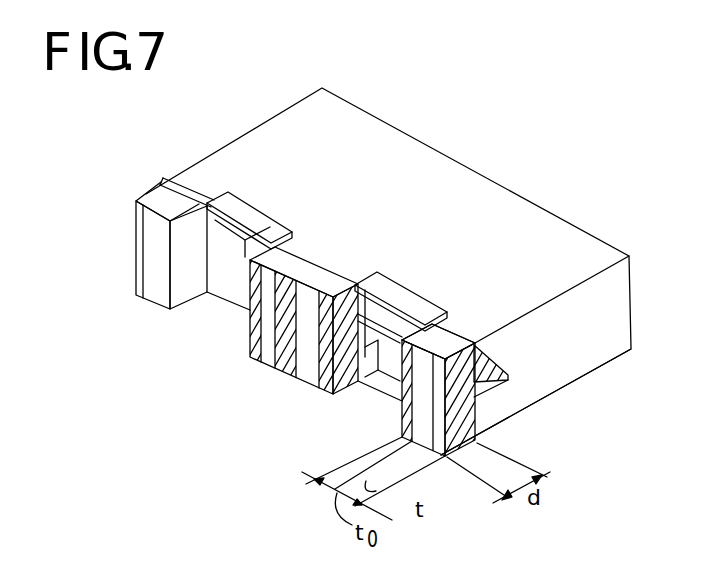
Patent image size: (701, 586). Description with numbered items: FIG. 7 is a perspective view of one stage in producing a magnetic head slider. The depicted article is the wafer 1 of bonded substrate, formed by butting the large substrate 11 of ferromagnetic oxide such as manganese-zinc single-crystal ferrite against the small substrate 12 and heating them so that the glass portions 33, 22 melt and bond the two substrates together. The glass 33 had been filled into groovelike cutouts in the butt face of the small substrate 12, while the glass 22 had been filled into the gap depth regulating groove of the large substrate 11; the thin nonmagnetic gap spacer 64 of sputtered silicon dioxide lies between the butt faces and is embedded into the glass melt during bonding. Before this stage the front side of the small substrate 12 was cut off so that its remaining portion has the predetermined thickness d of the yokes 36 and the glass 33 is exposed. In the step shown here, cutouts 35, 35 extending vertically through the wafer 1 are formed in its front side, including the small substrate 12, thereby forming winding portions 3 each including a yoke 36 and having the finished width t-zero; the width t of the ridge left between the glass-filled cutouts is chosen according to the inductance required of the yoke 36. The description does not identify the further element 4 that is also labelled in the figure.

The wafer 1 is at (388, 270).
The large substrate 11 is at (565, 342).
The small substrate 12 is at (480, 422).
The glass 22 is at (473, 343).
The winding portion 3 is at (397, 388).
The glass 33 is at (173, 312).
The cutouts 35 is at (240, 240).
The yoke 36 is at (403, 408).
The wedge portion 4 is at (490, 387).
The gap spacer 64 is at (185, 194).